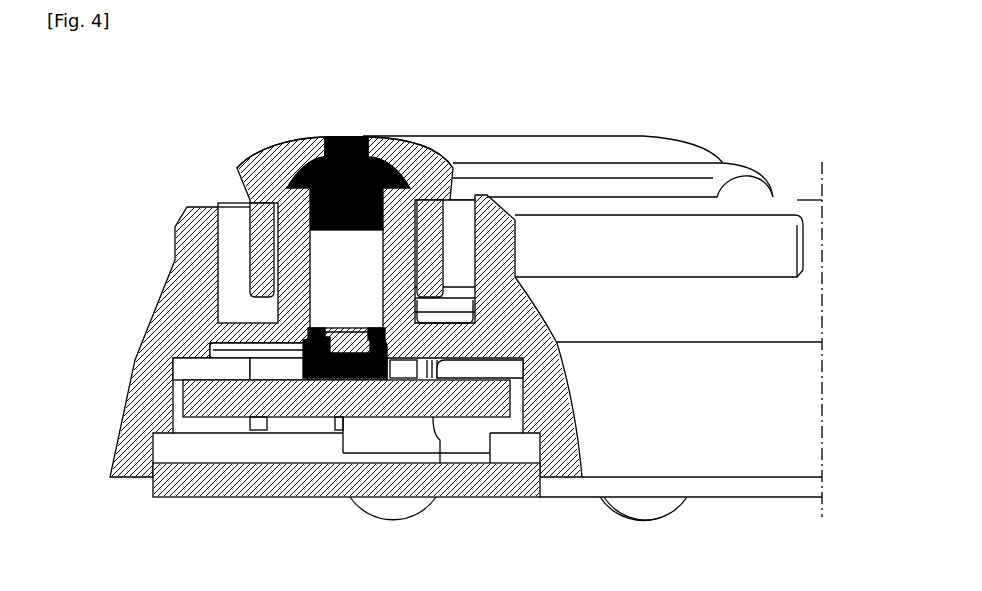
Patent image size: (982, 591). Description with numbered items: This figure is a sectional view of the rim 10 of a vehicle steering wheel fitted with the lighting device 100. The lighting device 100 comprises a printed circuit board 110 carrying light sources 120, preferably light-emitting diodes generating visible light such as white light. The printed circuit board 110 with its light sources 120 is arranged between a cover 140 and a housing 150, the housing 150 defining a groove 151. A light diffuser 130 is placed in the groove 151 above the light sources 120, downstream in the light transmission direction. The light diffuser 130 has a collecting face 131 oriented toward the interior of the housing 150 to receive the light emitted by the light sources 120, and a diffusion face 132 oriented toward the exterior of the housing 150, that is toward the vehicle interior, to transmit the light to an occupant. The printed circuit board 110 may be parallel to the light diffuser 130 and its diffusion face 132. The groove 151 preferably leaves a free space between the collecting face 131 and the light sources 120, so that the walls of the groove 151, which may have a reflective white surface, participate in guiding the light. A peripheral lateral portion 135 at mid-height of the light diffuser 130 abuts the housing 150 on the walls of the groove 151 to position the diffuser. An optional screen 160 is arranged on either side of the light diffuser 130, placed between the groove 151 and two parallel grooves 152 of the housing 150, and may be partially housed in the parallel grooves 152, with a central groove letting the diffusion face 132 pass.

The lighting device 100 is at (201, 102).
The rim 10 is at (138, 231).
The printed circuit board 110 is at (323, 380).
The light sources 120 is at (303, 343).
The light diffuser 130 is at (393, 160).
The collecting face 131 is at (268, 214).
The diffusion face 132 is at (355, 137).
The peripheral lateral portion 135 is at (300, 167).
The cover 140 is at (300, 478).
The housing 150 is at (703, 435).
The groove 151 is at (347, 247).
The parallel grooves 152 is at (247, 270).
The screen 160 is at (580, 145).